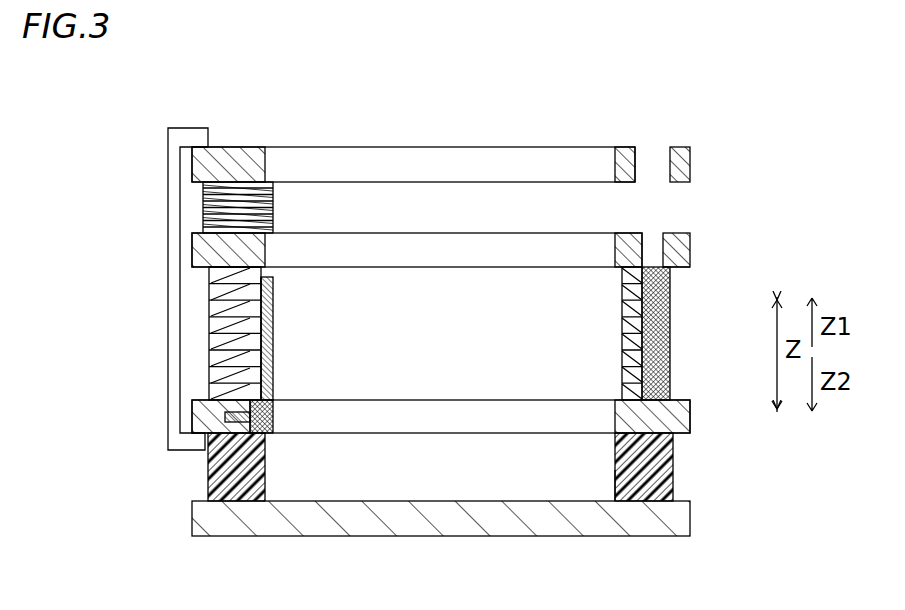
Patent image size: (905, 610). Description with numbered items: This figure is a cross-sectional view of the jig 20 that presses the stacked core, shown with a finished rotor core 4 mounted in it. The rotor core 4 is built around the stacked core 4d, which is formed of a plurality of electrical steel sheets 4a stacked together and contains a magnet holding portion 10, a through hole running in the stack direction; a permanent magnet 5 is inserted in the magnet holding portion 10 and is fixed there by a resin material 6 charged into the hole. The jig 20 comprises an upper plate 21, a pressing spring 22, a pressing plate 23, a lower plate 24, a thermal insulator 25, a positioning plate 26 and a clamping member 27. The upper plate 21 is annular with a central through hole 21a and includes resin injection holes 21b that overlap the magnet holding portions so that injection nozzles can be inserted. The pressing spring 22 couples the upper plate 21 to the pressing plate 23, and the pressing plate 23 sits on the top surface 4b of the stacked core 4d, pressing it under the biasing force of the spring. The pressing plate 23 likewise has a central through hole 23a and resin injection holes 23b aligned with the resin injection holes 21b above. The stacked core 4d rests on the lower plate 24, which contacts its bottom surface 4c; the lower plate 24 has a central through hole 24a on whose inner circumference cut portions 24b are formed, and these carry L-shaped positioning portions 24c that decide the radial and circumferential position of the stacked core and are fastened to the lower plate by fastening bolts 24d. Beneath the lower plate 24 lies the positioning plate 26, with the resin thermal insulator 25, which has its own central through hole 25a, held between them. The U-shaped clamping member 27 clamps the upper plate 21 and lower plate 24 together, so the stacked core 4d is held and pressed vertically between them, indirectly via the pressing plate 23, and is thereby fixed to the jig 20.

The jig 20 is at (134, 100).
The clamping member 27 is at (176, 144).
The upper plate 21 is at (247, 147).
The through hole 21a is at (618, 173).
The resin injection hole 21b is at (637, 155).
The pressing spring 22 is at (203, 196).
The pressing plate 23 is at (192, 240).
The through hole 23a is at (615, 253).
The resin injection hole 23b is at (668, 233).
The rotor core 4 is at (177, 342).
The electrical steel sheet 4a is at (210, 363).
The top surface 4b is at (192, 262).
The bottom surface 4c is at (228, 414).
The stacked core 4d is at (205, 328).
The lower plate 24 is at (394, 370).
The through hole 24a is at (615, 420).
The cut portion 24b is at (208, 457).
The positioning portion 24c is at (273, 314).
The fastening bolt 24d is at (273, 403).
The permanent magnet 5 is at (668, 330).
The resin material 6 is at (675, 267).
The magnet holding portion 10 is at (670, 355).
The thermal insulator 25 is at (673, 468).
The through hole 25a is at (612, 480).
The positioning plate 26 is at (690, 523).